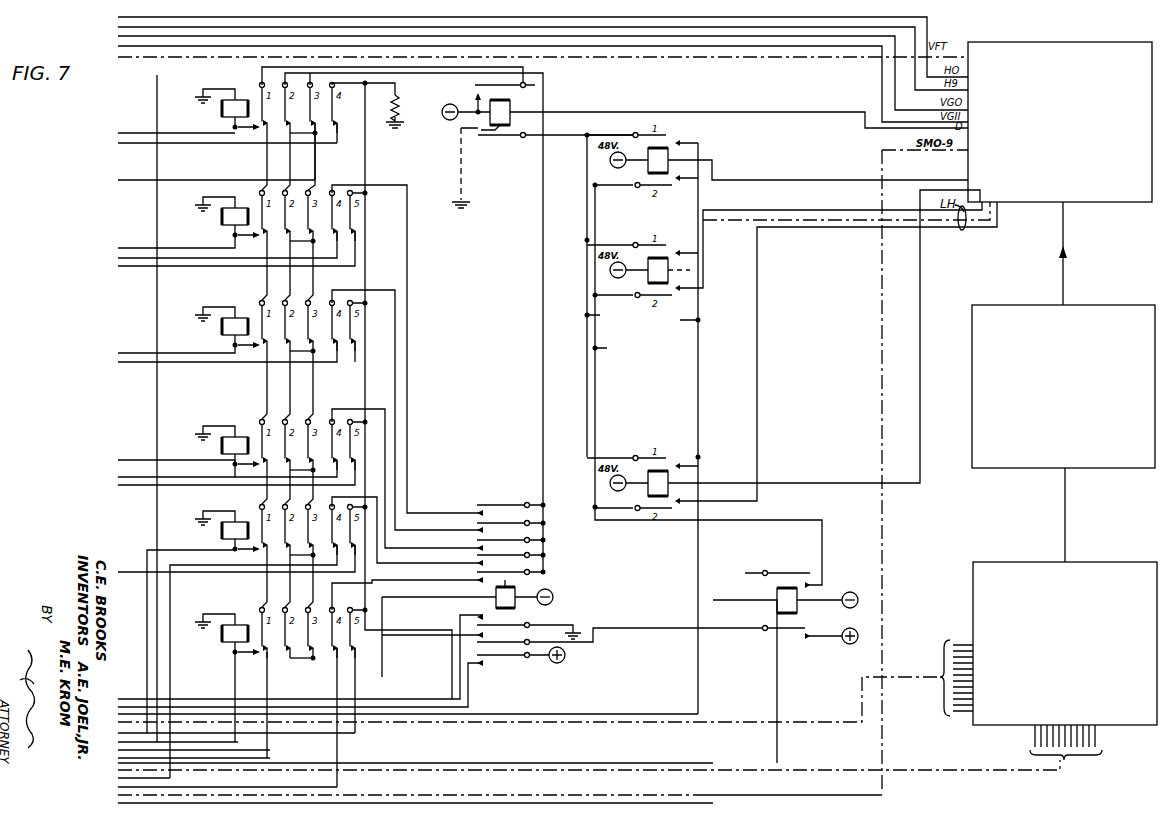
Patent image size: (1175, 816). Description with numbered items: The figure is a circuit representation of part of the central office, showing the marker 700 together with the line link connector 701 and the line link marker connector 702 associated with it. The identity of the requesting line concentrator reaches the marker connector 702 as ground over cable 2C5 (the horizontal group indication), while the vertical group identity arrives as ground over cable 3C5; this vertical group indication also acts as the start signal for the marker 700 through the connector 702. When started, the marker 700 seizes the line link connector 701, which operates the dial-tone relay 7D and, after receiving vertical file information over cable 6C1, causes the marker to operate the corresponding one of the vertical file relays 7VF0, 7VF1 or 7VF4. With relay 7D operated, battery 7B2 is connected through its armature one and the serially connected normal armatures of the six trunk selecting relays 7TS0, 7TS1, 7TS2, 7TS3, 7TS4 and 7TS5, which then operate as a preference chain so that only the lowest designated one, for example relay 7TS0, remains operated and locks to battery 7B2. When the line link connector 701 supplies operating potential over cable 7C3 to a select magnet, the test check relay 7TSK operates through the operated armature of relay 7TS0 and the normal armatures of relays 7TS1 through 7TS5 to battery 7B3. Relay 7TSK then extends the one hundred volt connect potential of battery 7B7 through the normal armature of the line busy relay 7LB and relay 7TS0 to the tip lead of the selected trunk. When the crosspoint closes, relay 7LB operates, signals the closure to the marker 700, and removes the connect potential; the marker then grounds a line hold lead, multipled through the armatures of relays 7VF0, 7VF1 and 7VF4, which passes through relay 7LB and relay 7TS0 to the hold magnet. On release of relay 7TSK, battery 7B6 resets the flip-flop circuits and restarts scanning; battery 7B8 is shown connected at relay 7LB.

The cable 6C1 is at (162, 58).
The trunk selecting relay 7TS0 is at (222, 105).
The trunk selecting relay 7TS1 is at (222, 213).
The trunk selecting relay 7TS2 is at (222, 323).
The trunk selecting relay 7TS3 is at (222, 442).
The trunk selecting relay 7TS4 is at (222, 527).
The trunk selecting relay 7TS5 is at (222, 630).
The test check relay 7TSK is at (496, 600).
The dial-tone relay 7D is at (498, 130).
The battery 7B2 is at (446, 120).
The battery 7B3 is at (553, 597).
The battery 7B6 is at (563, 661).
The +100 volt battery 7B7 is at (846, 643).
The battery 7B8 is at (855, 584).
The vertical file relay 7VF0 is at (658, 148).
The vertical file relay 7VF1 is at (652, 283).
The vertical file relay 7VF4 is at (655, 470).
The line busy relay 7LB is at (777, 597).
The cable 7C3 is at (880, 155).
The cable 3C5 is at (938, 677).
The cable 2C5 is at (933, 772).
The line link connector 701 is at (1060, 122).
The marker 700 is at (1063, 335).
The line link marker connector 702 is at (1048, 614).